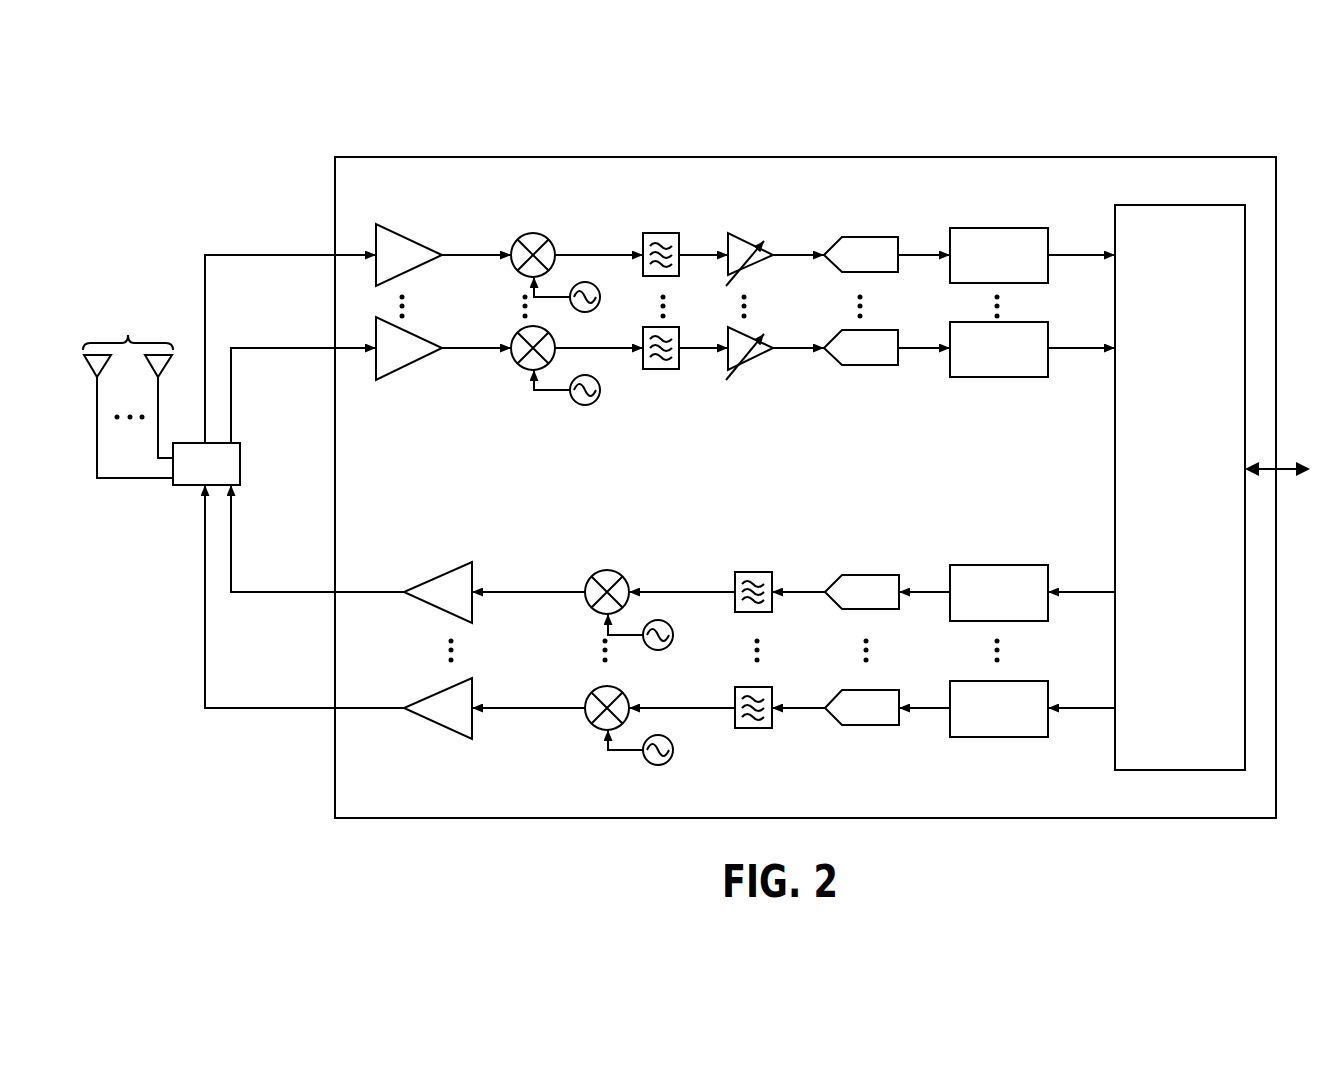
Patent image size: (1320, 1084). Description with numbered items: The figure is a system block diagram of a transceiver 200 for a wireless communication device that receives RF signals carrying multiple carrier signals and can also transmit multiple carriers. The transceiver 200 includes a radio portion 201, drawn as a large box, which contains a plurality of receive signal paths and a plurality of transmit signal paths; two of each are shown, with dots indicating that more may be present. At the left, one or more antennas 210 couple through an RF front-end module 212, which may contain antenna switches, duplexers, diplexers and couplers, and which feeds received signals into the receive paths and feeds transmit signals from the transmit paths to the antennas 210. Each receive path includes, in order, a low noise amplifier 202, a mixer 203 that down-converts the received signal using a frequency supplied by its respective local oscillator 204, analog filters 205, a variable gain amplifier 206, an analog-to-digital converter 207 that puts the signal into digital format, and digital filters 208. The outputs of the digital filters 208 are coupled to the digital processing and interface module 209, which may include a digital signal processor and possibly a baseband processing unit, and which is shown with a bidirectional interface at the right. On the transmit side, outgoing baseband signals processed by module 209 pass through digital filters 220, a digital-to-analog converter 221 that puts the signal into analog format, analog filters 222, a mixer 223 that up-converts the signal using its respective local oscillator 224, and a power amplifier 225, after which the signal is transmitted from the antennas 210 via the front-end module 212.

The transceiver 200 is at (1198, 125).
The radio portion 201 is at (762, 157).
The low noise amplifier 202 is at (412, 240).
The mixer 203 is at (556, 223).
The local oscillator 204 is at (593, 284).
The analog filter 205 is at (650, 233).
The variable gain amplifier 206 is at (735, 233).
The analog-to-digital converter 207 is at (878, 237).
The digital filter 208 is at (1008, 228).
The digital processing and interface module 209 is at (1172, 205).
The antennas 210 is at (128, 391).
The RF front-end module 212 is at (176, 487).
The digital filter 220 is at (1008, 565).
The digital-to-analog converter 221 is at (878, 575).
The analog filter 222 is at (762, 572).
The mixer 223 is at (619, 572).
The local oscillator 224 is at (668, 622).
The power amplifier 225 is at (470, 562).